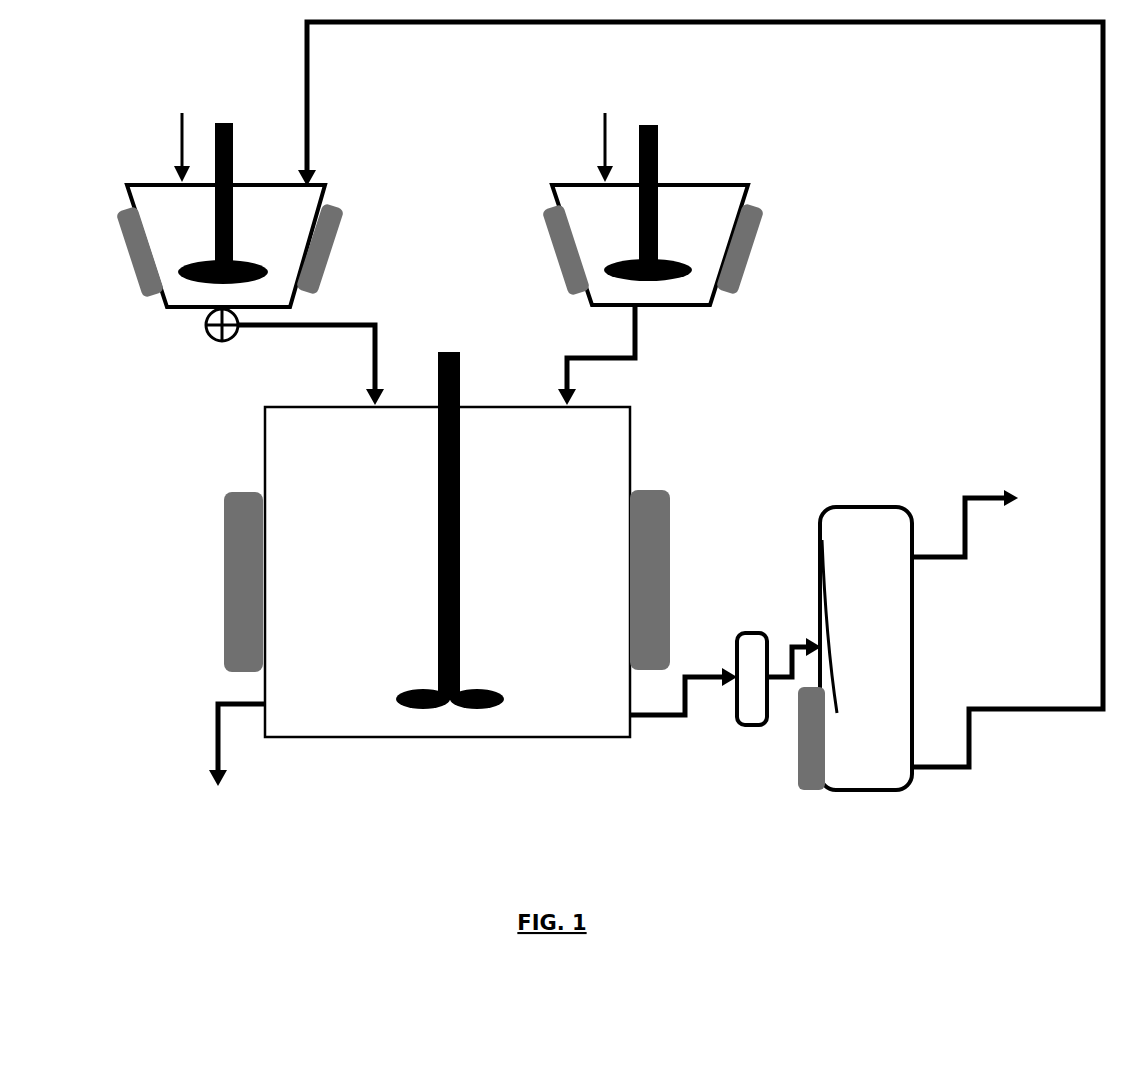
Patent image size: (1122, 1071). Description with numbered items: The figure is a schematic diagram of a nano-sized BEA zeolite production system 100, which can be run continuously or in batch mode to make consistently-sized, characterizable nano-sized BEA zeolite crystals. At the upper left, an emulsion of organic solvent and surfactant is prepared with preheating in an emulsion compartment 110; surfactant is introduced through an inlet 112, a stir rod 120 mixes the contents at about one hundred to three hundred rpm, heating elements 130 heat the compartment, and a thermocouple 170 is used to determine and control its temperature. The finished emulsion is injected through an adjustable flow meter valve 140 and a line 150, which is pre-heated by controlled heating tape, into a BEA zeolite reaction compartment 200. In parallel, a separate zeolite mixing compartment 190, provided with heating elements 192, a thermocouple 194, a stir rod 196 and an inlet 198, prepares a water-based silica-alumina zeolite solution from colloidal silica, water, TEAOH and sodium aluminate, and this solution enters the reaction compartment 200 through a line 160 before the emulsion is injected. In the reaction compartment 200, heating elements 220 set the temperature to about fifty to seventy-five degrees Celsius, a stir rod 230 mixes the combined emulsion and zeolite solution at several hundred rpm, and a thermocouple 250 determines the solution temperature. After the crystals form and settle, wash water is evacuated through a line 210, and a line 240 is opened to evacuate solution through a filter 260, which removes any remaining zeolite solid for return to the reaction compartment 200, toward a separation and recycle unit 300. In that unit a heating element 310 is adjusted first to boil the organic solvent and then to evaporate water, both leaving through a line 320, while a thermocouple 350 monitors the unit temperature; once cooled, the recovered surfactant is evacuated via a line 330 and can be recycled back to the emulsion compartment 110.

The nano-sized BEA zeolite production system 100 is at (893, 197).
The emulsion compartment 110 is at (138, 183).
The inlet 112 is at (177, 132).
The stir rod 120 is at (235, 158).
The heating elements 130 is at (130, 247).
The adjustable flow meter valve 140 is at (198, 341).
The line 150 is at (265, 328).
The line 160 is at (625, 355).
The thermocouple 170 is at (327, 212).
The zeolite mixing compartment 190 is at (650, 245).
The heating elements 192 is at (565, 250).
The thermocouple 194 is at (742, 212).
The stir rod 196 is at (658, 157).
The inlet 198 is at (603, 137).
The BEA zeolite reaction compartment 200 is at (447, 572).
The line 210 is at (227, 764).
The heating elements 220 is at (218, 550).
The stir rod 230 is at (450, 511).
The line 240 is at (683, 715).
The thermocouple 250 is at (585, 582).
The filter 260 is at (773, 665).
The separation and recycle unit 300 is at (866, 648).
The heating element 310 is at (790, 745).
The line 320 is at (969, 510).
The line 330 is at (700, 394).
The thermocouple 350 is at (822, 540).